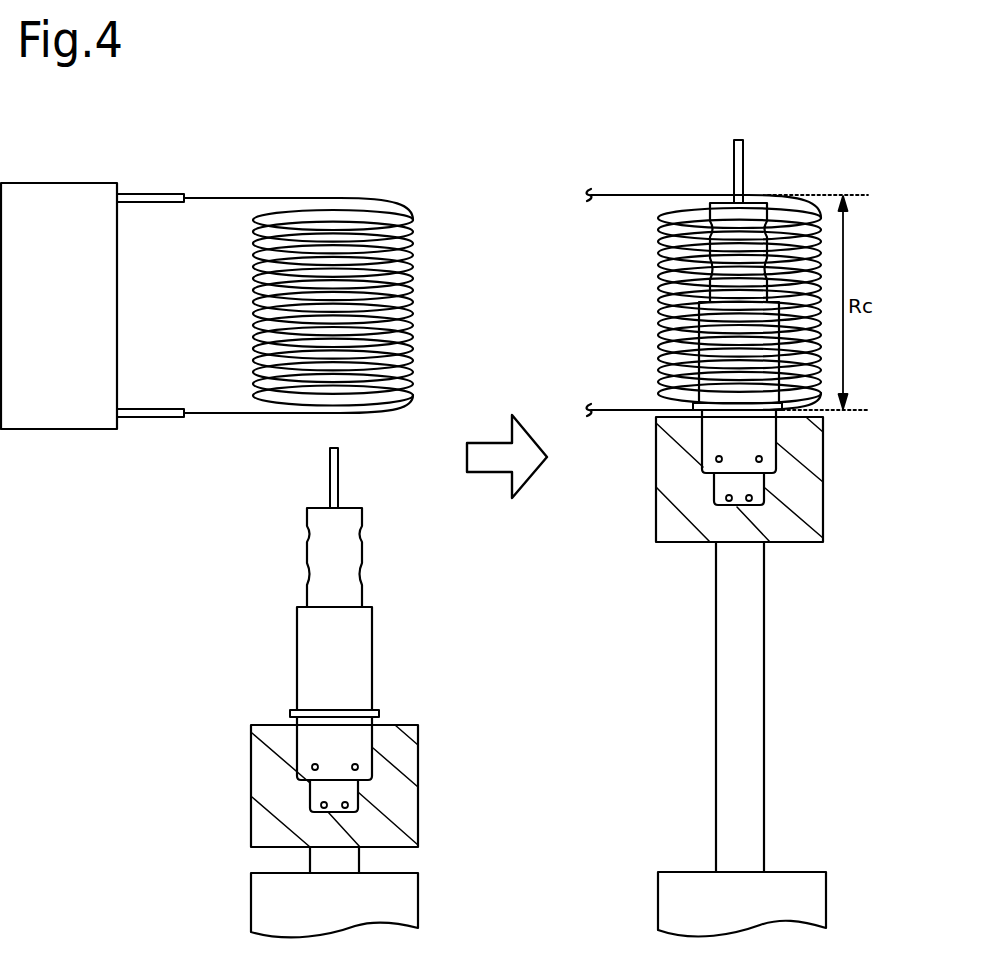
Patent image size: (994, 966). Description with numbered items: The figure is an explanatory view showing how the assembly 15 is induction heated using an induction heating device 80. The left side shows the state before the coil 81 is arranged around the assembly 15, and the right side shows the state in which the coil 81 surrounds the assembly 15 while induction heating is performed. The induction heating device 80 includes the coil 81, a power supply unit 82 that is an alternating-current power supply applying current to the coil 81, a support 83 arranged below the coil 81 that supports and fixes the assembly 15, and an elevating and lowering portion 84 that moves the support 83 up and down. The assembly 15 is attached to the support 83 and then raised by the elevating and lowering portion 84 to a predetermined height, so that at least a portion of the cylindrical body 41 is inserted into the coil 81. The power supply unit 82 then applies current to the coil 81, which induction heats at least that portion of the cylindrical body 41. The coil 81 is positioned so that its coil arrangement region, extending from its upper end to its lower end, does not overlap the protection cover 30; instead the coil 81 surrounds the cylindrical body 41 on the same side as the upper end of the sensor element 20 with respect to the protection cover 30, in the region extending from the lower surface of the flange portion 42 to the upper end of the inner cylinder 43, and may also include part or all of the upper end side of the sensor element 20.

The assembly 15 is at (215, 543).
The sensor element 20 is at (330, 485).
The protection cover 30 is at (307, 734).
The cylindrical body 41 is at (238, 587).
The flange portion 42 is at (305, 626).
The inner cylinder 43 is at (313, 595).
The induction heating device 80 is at (68, 108).
The coil 81 is at (377, 200).
The power supply unit 82 is at (60, 183).
The support 83 is at (251, 750).
The elevating and lowering portion 84 is at (251, 890).